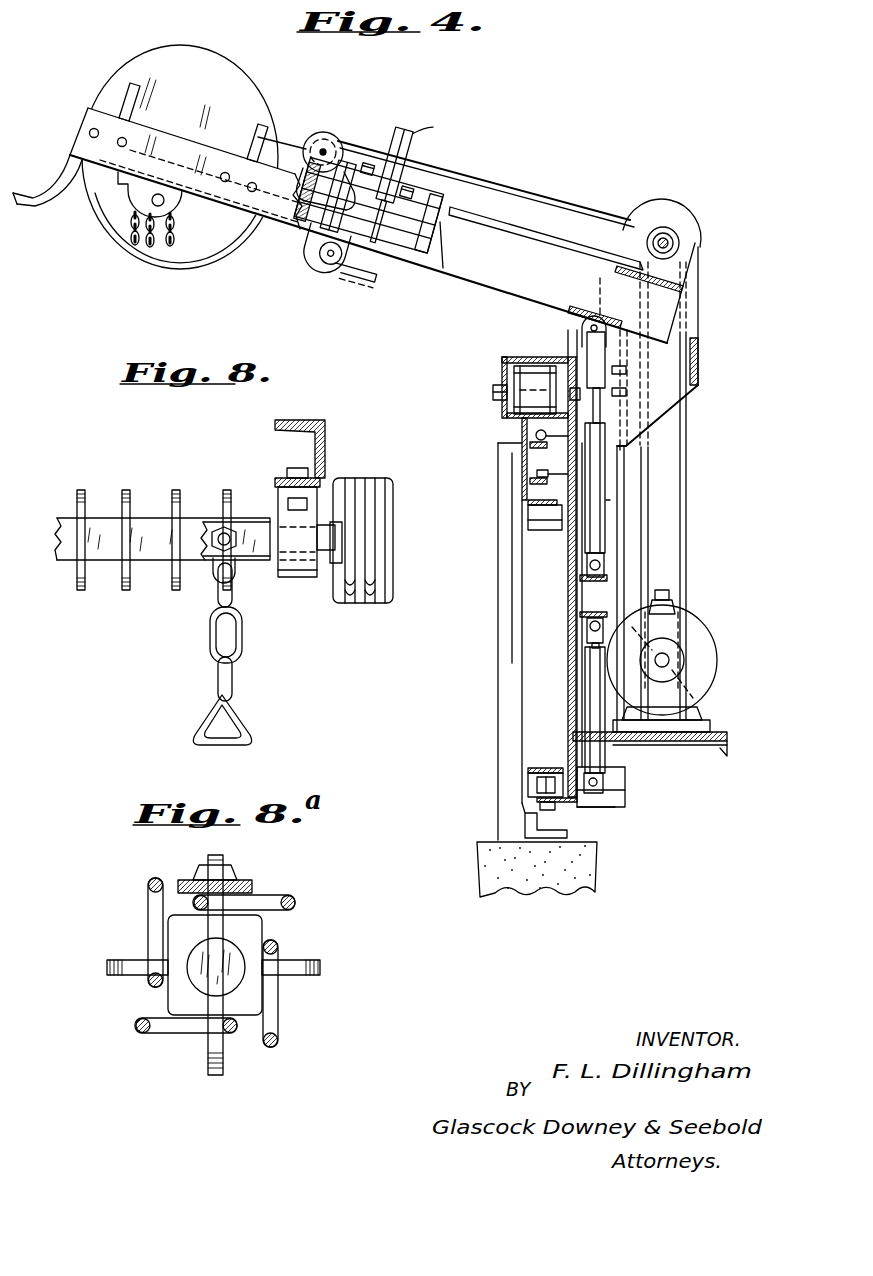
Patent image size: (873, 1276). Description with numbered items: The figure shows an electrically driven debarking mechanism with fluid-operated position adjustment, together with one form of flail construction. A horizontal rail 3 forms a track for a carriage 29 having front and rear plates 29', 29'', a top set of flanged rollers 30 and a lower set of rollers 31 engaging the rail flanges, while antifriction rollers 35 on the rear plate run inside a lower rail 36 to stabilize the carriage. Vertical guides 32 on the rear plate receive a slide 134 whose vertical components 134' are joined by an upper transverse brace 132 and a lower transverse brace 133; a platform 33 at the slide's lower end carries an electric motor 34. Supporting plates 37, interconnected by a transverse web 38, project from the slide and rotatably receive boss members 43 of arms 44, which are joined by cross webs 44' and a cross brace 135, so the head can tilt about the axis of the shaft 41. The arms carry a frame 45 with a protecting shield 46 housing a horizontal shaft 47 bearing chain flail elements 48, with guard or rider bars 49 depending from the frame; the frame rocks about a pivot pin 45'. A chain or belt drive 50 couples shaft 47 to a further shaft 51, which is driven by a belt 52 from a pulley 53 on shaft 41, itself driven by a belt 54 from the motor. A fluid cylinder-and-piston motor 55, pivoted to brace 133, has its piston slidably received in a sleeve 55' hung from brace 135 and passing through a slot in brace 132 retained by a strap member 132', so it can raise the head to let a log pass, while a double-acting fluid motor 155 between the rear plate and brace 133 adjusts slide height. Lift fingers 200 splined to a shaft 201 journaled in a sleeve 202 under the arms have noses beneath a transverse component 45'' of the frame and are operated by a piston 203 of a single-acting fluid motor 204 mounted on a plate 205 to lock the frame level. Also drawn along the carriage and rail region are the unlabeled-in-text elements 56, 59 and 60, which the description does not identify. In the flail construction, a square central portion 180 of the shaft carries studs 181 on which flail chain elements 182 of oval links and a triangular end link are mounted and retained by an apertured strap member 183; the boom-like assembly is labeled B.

In FIG. 4, the horizontal rail 3 is at (520, 430).
In FIG. 4, the carriage 29 is at (509, 379).
In FIG. 4, the front plate 29' is at (520, 404).
In FIG. 4, the rear plate 29'' is at (590, 583).
In FIG. 4, the flanged rollers 30 is at (530, 378).
In FIG. 4, the lower rollers 31 is at (545, 530).
In FIG. 4, the vertical guides 32 is at (626, 794).
In FIG. 4, the platform 33 is at (656, 748).
In FIG. 4, the electric motor 34 is at (716, 683).
In FIG. 4, the antifriction rollers 35 is at (558, 808).
In FIG. 4, the lower rail 36 is at (542, 768).
In FIG. 4, the supporting plates 37 is at (688, 400).
In FIG. 4, the transverse web 38 is at (699, 366).
In FIG. 4, the shaft 41 is at (674, 242).
In FIG. 4, the boss members 43 is at (699, 265).
In FIG. 4, the arms 44 is at (546, 233).
In FIG. 4, the cross webs 44' is at (462, 248).
In FIG. 4, the frame 45 is at (340, 213).
In FIG. 8, the frame 45 is at (334, 511).
In FIG. 4, the pivot pin 45' is at (360, 214).
In FIG. 4, the transverse component 45'' is at (291, 202).
In FIG. 4, the protecting shield 46 is at (122, 64).
In FIG. 4, the horizontal shaft 47 is at (152, 200).
In FIG. 4, the chain flail elements 48 is at (158, 254).
In FIG. 4, the guard or rider bars 49 is at (200, 250).
In FIG. 4, the chain or belt drive 50 is at (303, 142).
In FIG. 4, the horizontal shaft 51 is at (328, 150).
In FIG. 4, the belt 52 is at (395, 172).
In FIG. 4, the pulley 53 is at (672, 216).
In FIG. 4, the belt 54 is at (687, 512).
In FIG. 4, the fluid cylinder-and-piston motor 55 is at (631, 470).
In FIG. 4, the sleeve 55' is at (564, 346).
In FIG. 4, the nut 56 is at (540, 470).
In FIG. 4, the guide plate 59 is at (530, 492).
In FIG. 4, the guide channel 60 is at (521, 455).
In FIG. 4, the upper transverse brace 132 is at (645, 384).
In FIG. 4, the strap member 132' is at (646, 356).
In FIG. 4, the lower transverse brace 133 is at (600, 598).
In FIG. 4, the slide 134 is at (644, 529).
In FIG. 4, the vertical components 134' is at (654, 447).
In FIG. 4, the cross brace 135 is at (578, 312).
In FIG. 4, the double-acting fluid motor 155 is at (606, 690).
In FIG. 8, the square central portion 180 is at (188, 518).
In FIG. 8a, the square central portion 180 is at (263, 932).
In FIG. 8, the studs 181 is at (170, 500).
In FIG. 8a, the studs 181 is at (321, 967).
In FIG. 8, the flail chain element 182 is at (244, 640).
In FIG. 8, the apertured strap member 183 is at (247, 557).
In FIG. 8a, the apertured strap member 183 is at (255, 884).
In FIG. 4, the lift fingers 200 is at (338, 282).
In FIG. 4, the shaft 201 is at (352, 272).
In FIG. 4, the sleeve 202 is at (379, 278).
In FIG. 4, the piston 203 is at (368, 205).
In FIG. 4, the single-acting fluid motor 204 is at (365, 171).
In FIG. 4, the plate 205 is at (409, 186).
In FIG. 4, the boom B is at (502, 173).